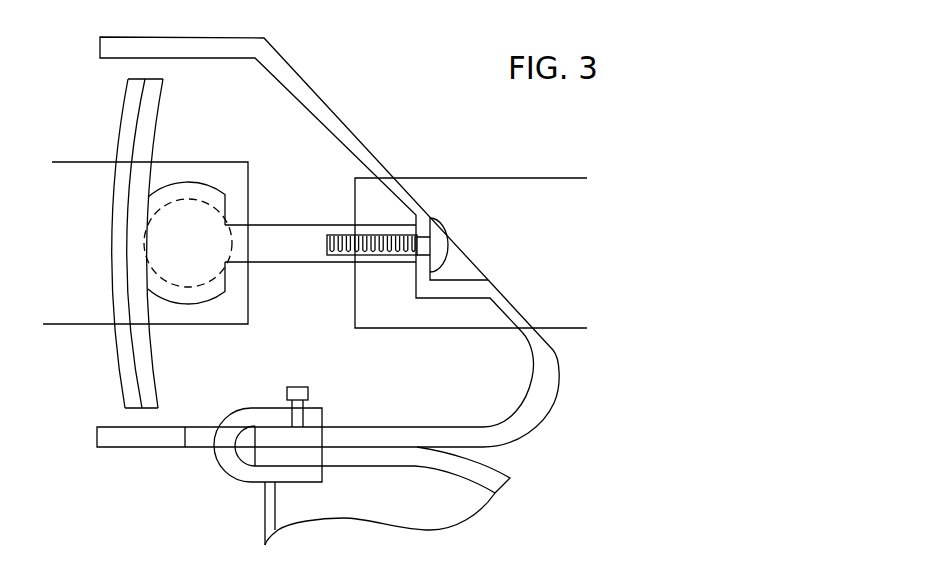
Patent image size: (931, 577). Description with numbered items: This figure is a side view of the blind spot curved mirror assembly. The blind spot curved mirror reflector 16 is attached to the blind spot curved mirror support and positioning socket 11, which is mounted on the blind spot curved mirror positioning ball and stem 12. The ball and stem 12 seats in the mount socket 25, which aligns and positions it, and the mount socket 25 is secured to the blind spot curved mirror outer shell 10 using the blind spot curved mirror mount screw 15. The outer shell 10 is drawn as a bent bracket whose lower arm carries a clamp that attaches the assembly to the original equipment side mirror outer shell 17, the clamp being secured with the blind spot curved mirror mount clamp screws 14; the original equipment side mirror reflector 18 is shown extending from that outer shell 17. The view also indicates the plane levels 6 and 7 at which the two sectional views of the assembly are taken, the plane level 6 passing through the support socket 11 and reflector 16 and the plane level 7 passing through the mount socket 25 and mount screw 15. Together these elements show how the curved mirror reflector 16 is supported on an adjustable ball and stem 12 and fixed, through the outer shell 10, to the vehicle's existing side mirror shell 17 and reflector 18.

The plane level for FIG. 6 is at (136, 243).
The plane level for FIG. 7 is at (479, 254).
The blind spot curved mirror outer shell 10 is at (362, 138).
The blind spot curved mirror support and positioning socket 11 is at (188, 305).
The blind spot curved mirror positioning ball and stem 12 is at (272, 263).
The blind spot curved mirror mount clamp screws 14 is at (298, 387).
The blind spot curved mirror mount screw 15 is at (450, 247).
The blind spot curved mirror reflector 16 is at (118, 357).
The original equipment side mirror outer shell 17 is at (402, 466).
The original equipment side mirror reflector 18 is at (263, 499).
The mount socket 25 is at (407, 270).